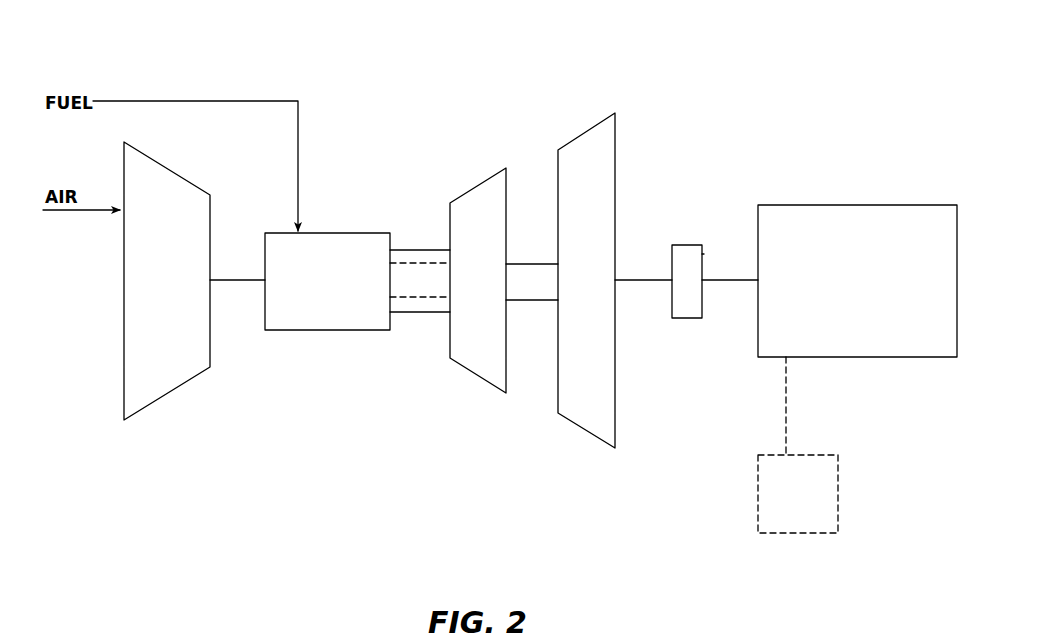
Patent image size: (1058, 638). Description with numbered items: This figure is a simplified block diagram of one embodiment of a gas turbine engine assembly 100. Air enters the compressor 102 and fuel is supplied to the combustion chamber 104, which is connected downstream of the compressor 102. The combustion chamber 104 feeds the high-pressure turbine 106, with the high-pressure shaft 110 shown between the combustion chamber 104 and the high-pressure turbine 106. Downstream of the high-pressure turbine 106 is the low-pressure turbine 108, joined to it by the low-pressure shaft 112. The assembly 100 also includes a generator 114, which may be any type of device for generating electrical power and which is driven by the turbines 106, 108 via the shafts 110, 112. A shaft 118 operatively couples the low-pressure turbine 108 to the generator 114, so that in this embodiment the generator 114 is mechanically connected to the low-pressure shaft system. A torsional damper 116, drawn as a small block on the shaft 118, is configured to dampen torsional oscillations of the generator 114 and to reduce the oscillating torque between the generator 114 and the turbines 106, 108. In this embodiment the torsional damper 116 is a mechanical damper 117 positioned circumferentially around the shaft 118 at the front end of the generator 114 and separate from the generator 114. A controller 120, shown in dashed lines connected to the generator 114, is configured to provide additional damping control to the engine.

The gas turbine engine assembly 100 is at (764, 70).
The compressor 102 is at (167, 281).
The combustion chamber 104 is at (327, 281).
The high-pressure turbine 106 is at (478, 280).
The low-pressure turbine 108 is at (586, 280).
The high-pressure shaft 110 is at (422, 250).
The low-pressure shaft 112 is at (533, 300).
The generator 114 is at (857, 281).
The torsional damper 116 is at (690, 243).
The mechanical damper 117 is at (702, 255).
The shaft 118 is at (737, 282).
The controller 120 is at (798, 445).